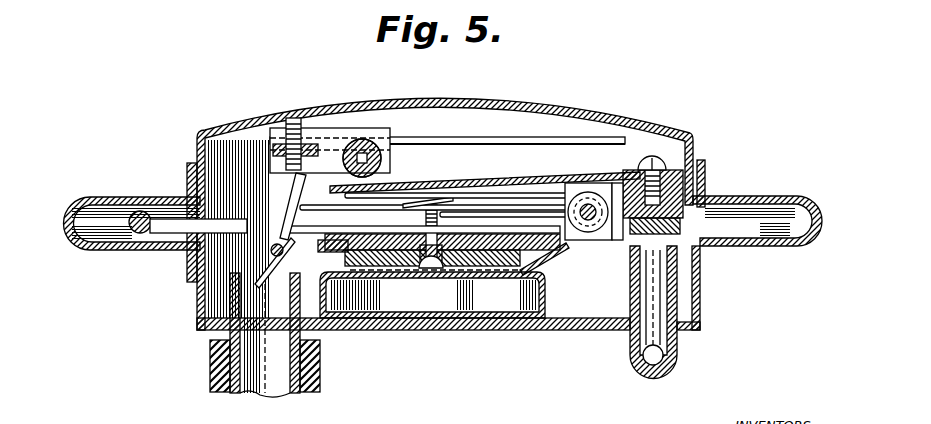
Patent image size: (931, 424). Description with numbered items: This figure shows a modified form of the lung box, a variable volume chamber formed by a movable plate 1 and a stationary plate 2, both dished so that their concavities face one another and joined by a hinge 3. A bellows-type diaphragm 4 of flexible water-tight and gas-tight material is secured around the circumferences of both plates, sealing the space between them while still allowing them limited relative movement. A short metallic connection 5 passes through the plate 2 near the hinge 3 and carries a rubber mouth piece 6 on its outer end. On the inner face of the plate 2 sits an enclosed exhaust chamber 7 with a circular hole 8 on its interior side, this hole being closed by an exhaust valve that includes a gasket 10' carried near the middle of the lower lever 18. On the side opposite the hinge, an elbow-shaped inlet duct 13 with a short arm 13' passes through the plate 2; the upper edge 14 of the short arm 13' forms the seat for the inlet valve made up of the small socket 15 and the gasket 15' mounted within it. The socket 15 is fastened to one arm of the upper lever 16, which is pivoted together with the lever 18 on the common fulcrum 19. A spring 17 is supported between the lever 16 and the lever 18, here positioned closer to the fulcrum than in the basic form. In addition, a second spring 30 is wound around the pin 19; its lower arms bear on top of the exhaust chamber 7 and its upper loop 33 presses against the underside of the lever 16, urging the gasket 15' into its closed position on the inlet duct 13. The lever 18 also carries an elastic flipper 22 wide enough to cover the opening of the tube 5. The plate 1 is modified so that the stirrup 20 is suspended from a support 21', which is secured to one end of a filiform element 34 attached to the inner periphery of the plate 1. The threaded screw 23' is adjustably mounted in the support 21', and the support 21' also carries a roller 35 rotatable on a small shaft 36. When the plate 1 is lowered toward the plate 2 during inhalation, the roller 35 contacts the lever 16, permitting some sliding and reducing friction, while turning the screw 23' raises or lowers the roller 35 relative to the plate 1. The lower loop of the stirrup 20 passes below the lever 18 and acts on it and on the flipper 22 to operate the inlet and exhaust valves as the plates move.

The plate 1 is at (557, 104).
The plate 2 is at (500, 332).
The hinge 3 is at (137, 232).
The diaphragm 4 is at (140, 197).
The connection 5 is at (285, 385).
The rubber mouth piece 6 is at (210, 375).
The exhaust chamber 7 is at (410, 318).
The circular hole 8 is at (470, 282).
The gasket 10' is at (344, 274).
The inlet duct 13 is at (685, 356).
The short arm 13' is at (688, 312).
The upper edge 14 is at (638, 262).
The socket 15 is at (683, 166).
The gasket 15' is at (756, 221).
The lever 16 is at (500, 183).
The spring 17 is at (448, 223).
The lever 18 is at (523, 236).
The fulcrum 19 is at (588, 192).
The stirrup 20 is at (288, 192).
The support 21' is at (330, 124).
The flipper 22 is at (258, 283).
The threaded screw 23' is at (300, 123).
The second spring 30 is at (554, 263).
The upper loop 33 is at (345, 195).
The filiform element 34 is at (466, 137).
The roller 35 is at (356, 143).
The small shaft 36 is at (382, 160).